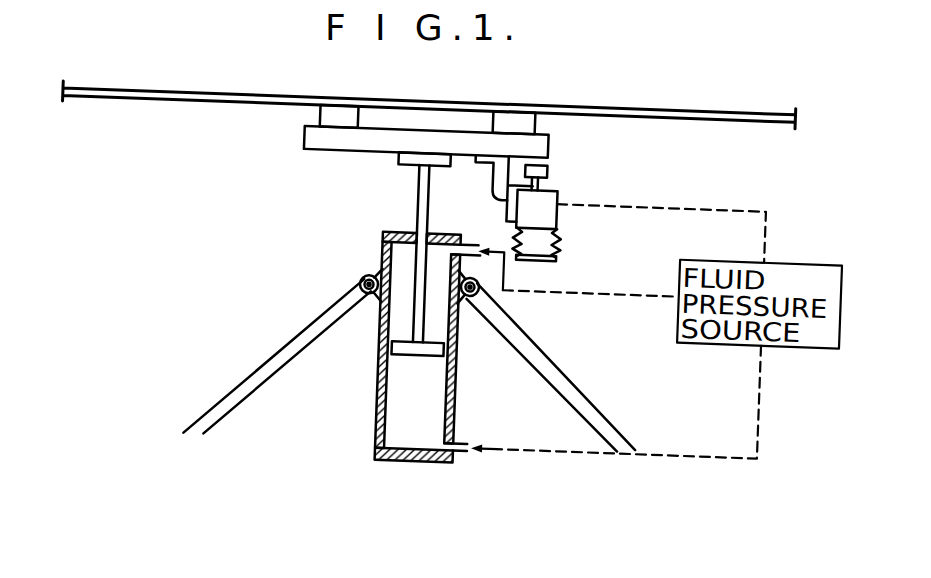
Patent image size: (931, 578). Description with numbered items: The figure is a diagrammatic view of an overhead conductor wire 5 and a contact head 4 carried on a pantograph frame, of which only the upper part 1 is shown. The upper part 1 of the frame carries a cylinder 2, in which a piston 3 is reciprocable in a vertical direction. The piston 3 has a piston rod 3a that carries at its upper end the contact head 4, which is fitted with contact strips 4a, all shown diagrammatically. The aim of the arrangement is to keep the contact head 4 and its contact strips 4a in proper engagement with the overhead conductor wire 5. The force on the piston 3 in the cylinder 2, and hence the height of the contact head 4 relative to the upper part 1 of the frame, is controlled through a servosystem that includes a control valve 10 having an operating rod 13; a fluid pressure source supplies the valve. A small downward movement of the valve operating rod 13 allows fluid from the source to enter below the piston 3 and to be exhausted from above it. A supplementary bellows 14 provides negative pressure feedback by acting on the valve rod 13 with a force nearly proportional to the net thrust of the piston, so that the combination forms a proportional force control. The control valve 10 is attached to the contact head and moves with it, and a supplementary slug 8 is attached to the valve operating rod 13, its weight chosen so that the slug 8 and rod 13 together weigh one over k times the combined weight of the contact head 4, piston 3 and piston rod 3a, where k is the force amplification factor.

The upper part of pantograph frame 1 is at (579, 374).
The cylinder 2 is at (469, 399).
The piston 3 is at (402, 338).
The piston rod 3a is at (422, 194).
The contact head 4 is at (296, 154).
The contact strips 4a is at (338, 105).
The overhead conductor wire 5 is at (150, 95).
The supplementary slug 8 is at (550, 147).
The control valve 10 is at (553, 200).
The valve operating rod 13 is at (543, 165).
The supplementary bellows 14 is at (543, 232).